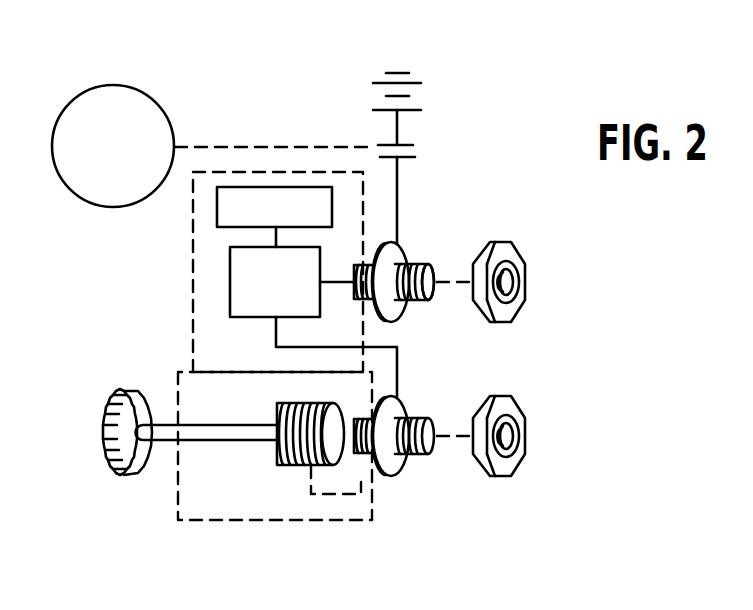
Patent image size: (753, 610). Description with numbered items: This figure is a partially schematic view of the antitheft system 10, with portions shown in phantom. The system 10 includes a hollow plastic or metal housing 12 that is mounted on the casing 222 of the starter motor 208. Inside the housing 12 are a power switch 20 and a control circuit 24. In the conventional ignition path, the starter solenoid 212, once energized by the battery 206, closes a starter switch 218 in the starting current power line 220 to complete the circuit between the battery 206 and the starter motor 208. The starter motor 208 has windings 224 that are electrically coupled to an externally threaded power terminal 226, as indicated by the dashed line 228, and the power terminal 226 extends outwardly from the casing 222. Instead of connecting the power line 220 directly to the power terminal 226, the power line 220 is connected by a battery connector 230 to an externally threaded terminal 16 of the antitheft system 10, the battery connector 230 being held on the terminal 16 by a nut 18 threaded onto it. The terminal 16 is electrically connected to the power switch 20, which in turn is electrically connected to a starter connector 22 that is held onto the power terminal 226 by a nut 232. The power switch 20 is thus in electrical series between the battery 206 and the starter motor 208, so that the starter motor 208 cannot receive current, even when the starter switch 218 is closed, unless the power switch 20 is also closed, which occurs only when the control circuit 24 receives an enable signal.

The antitheft system 10 is at (231, 124).
The housing 12 is at (263, 171).
The terminal 16 is at (427, 291).
The nut 18 is at (515, 249).
The power switch 20 is at (230, 270).
The starter connector 22 is at (408, 402).
The control circuit 24 is at (217, 212).
The battery 206 is at (410, 83).
The starter motor 208 is at (240, 504).
The starter solenoid 212 is at (85, 90).
The starter switch 218 is at (405, 143).
The starting current power line 220 is at (398, 200).
The casing 222 is at (178, 405).
The windings 224 is at (298, 469).
The power terminal 226 is at (422, 446).
The dashed line 228 is at (340, 505).
The battery connector 230 is at (408, 250).
The nut 232 is at (510, 407).